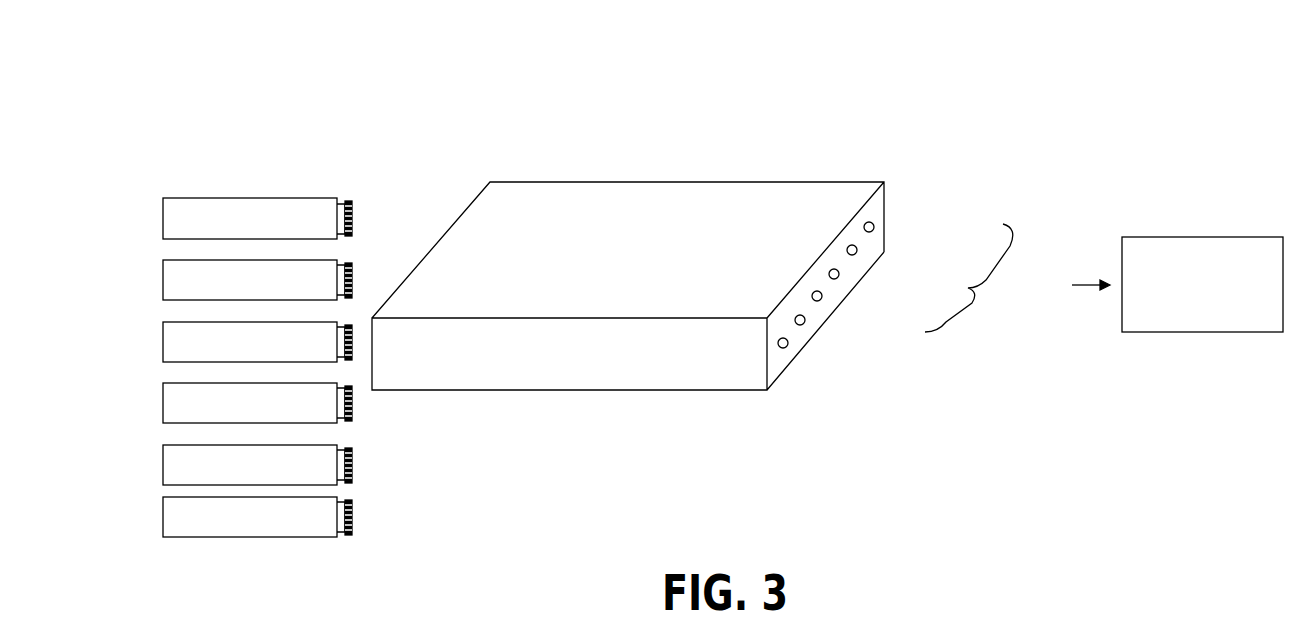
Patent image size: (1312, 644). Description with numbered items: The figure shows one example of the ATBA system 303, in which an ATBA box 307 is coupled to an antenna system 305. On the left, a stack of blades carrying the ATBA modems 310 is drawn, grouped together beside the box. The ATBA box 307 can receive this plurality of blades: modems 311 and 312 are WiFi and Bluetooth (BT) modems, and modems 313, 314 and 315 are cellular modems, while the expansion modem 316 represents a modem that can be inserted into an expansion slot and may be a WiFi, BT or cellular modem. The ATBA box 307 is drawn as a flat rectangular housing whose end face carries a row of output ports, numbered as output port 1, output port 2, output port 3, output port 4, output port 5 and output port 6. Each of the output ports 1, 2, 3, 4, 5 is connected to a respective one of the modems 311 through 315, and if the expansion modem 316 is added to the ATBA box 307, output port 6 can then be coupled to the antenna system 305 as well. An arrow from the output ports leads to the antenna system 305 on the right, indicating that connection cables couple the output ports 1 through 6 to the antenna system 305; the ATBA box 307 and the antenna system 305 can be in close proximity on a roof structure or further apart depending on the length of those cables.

The ATBA system 303 is at (1068, 34).
The antenna system 305 is at (1187, 333).
The ATBA box 307 is at (673, 218).
The ATBA modems 310 is at (337, 183).
The WiFi and Bluetooth modem 311 is at (163, 216).
The WiFi and Bluetooth modem 312 is at (163, 278).
The cellular modem 313 is at (163, 339).
The cellular modem 314 is at (163, 400).
The cellular modem 315 is at (163, 462).
The expansion modem 316 is at (163, 515).
The output port 1 is at (874, 227).
The output port 2 is at (857, 250).
The output port 3 is at (839, 274).
The output port 4 is at (822, 296).
The output port 5 is at (805, 320).
The output port 6 is at (798, 351).